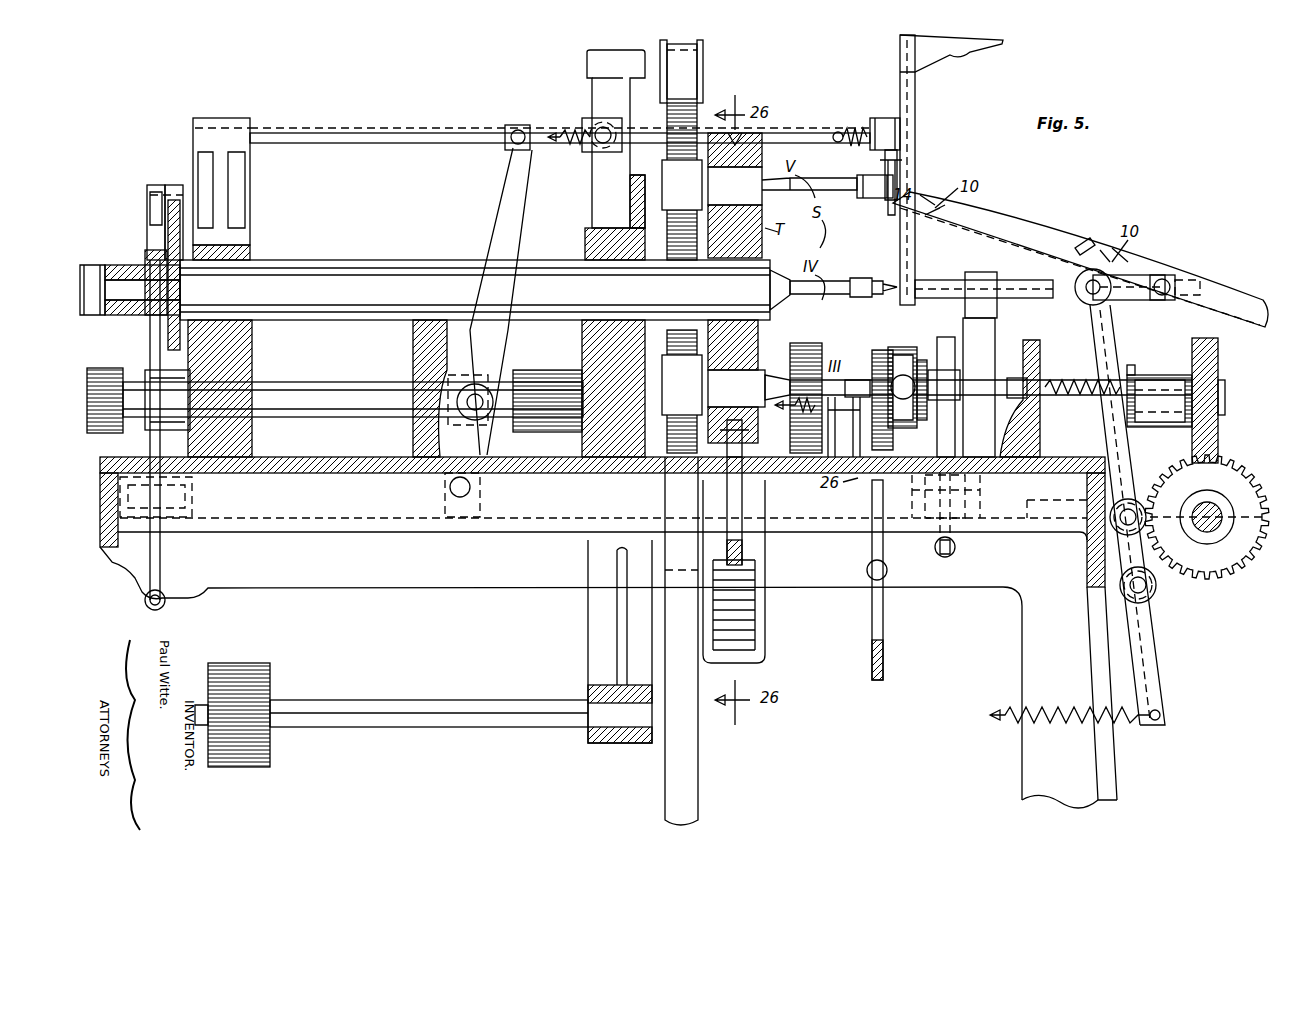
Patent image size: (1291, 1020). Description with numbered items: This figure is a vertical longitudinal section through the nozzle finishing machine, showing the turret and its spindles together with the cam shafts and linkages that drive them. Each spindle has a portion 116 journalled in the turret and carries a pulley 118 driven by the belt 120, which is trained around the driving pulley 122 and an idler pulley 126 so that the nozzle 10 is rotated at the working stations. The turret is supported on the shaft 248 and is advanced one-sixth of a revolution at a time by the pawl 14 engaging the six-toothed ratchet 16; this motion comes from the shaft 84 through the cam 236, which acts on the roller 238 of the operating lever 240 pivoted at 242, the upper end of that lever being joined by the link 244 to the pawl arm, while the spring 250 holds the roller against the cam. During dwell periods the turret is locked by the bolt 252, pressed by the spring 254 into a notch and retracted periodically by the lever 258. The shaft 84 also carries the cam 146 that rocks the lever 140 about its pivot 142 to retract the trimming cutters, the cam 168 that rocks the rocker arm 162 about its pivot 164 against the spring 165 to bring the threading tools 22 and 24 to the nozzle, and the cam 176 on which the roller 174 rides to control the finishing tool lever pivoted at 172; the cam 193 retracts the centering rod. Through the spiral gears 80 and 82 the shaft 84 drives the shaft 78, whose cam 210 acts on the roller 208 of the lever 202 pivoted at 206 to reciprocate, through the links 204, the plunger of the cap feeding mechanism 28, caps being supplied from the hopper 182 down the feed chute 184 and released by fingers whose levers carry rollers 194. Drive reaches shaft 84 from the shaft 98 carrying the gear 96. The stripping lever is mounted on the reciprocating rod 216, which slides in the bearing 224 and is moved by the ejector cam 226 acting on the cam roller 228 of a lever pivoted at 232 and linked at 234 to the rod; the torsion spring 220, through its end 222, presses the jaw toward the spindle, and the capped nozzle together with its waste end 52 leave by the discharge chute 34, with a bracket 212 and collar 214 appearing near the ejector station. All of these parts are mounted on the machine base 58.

The nozzle 10 is at (880, 290).
The pawl 14 is at (175, 185).
The ratchet 16 is at (150, 230).
The threading tool 22 is at (900, 347).
The threading tool 24 is at (900, 415).
The cap feeding mechanism 28 is at (940, 280).
The discharge chute 34 is at (1000, 215).
The block 52 is at (882, 118).
The machine base 58 is at (322, 460).
The shaft 78 is at (1192, 517).
The spiral gear 80 is at (1225, 578).
The spiral gear 82 is at (1205, 338).
The shaft 84 is at (285, 382).
The gear 96 is at (240, 663).
The shaft 98 is at (415, 700).
The spindle portion 116 is at (736, 288).
The pulley 118 is at (682, 278).
The belt 120 is at (703, 110).
The driving pulley 122 is at (700, 760).
The ring 126 is at (703, 45).
The lever 140 is at (883, 622).
The pivot 142 is at (900, 495).
The cam 146 is at (880, 350).
The rocker arm 162 is at (950, 500).
The pivot 164 is at (1045, 473).
The spring 165 is at (945, 560).
The cam 168 is at (945, 337).
The pivot 172 is at (850, 380).
The roller 174 is at (745, 430).
The cam 176 is at (805, 343).
The hopper 182 is at (985, 45).
The feed chute 184 is at (915, 88).
The cam 193 is at (1032, 340).
The roller 194 is at (1075, 305).
The lever 202 is at (1105, 352).
The link 204 is at (1135, 300).
The pivot 206 is at (1150, 605).
The roller 208 is at (1146, 505).
The cam 210 is at (1185, 570).
The plate 212 is at (900, 160).
The collar 214 is at (880, 200).
The reciprocating rod 216 is at (388, 133).
The torsion spring 220 is at (845, 128).
The spring end 222 is at (895, 150).
The bearing 224 is at (222, 118).
The ejector cam 226 is at (415, 370).
The cam roller 228 is at (490, 385).
The pivot 232 is at (472, 490).
The link connection 234 is at (528, 122).
The cam 236 is at (147, 368).
The roller 238 is at (150, 385).
The operating lever 240 is at (182, 478).
The pivot 242 is at (192, 500).
The link 244 is at (157, 185).
The shaft 248 is at (338, 260).
The spring 250 is at (145, 600).
The bolt 252 is at (727, 493).
The spring 254 is at (765, 615).
The lever 258 is at (742, 555).